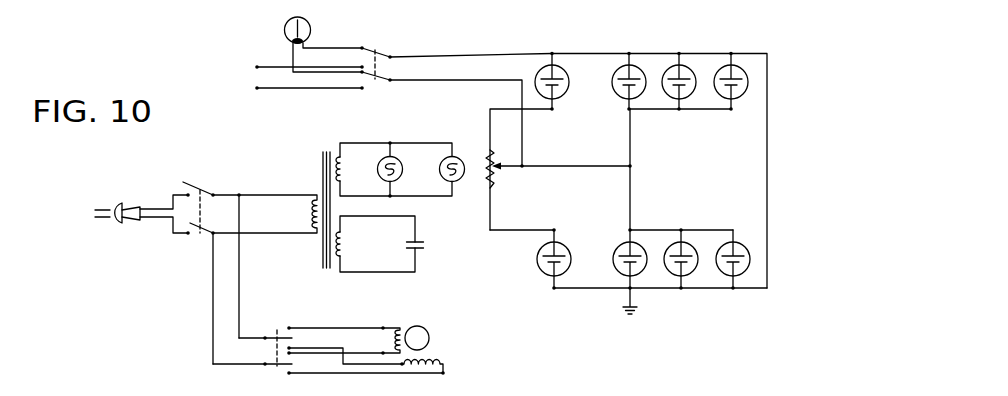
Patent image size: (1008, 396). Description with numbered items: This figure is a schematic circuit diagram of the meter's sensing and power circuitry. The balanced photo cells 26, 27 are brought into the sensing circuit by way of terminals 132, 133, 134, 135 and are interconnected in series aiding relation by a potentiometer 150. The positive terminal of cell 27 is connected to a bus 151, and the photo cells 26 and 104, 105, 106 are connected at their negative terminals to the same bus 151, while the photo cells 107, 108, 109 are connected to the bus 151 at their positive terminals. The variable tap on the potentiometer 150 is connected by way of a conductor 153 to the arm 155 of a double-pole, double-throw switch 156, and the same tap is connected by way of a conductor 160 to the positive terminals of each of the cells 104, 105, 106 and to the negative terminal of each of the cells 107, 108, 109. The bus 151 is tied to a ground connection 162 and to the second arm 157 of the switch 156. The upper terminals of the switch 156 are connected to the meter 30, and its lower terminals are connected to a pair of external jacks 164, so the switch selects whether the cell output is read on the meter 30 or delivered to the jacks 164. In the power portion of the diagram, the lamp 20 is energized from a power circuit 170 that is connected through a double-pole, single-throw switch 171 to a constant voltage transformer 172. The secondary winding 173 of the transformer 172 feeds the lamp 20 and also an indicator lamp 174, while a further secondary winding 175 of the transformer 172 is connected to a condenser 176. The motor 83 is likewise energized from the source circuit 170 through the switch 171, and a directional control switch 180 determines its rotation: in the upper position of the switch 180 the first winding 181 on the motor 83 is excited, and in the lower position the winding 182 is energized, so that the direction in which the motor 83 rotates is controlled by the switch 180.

The meter 30 is at (284, 32).
The external jacks 164 is at (257, 88).
The double-pole, double-throw switch 156 is at (382, 62).
The second arm of the switch 157 is at (373, 51).
The arm of the switch 155 is at (376, 81).
The terminal 132 is at (553, 53).
The photo cell 26 is at (565, 97).
The terminal 133 is at (553, 110).
The photo cell 104 is at (613, 82).
The photo cell 105 is at (673, 103).
The photo cell 106 is at (727, 101).
The conductor 153 is at (523, 151).
The potentiometer 150 is at (497, 178).
The conductor 160 is at (615, 168).
The terminal 134 is at (555, 230).
The photo cell 27 is at (537, 268).
The terminal 135 is at (554, 290).
The bus 151 is at (605, 290).
The photo cell 107 is at (638, 275).
The photo cell 108 is at (688, 244).
The photo cell 109 is at (737, 277).
The ground connection 162 is at (628, 318).
The power circuit 170 is at (155, 210).
The double-pole, single-throw switch 171 is at (203, 192).
The constant voltage transformer 172 is at (332, 133).
The secondary winding 173 is at (345, 167).
The indicator lamp 174 is at (397, 158).
The lamp 20 is at (439, 175).
The secondary winding 175 is at (345, 249).
The condenser 176 is at (427, 249).
The directional control switch 180 is at (278, 335).
The first winding 181 is at (397, 326).
The motor 83 is at (430, 333).
The winding 182 is at (434, 356).